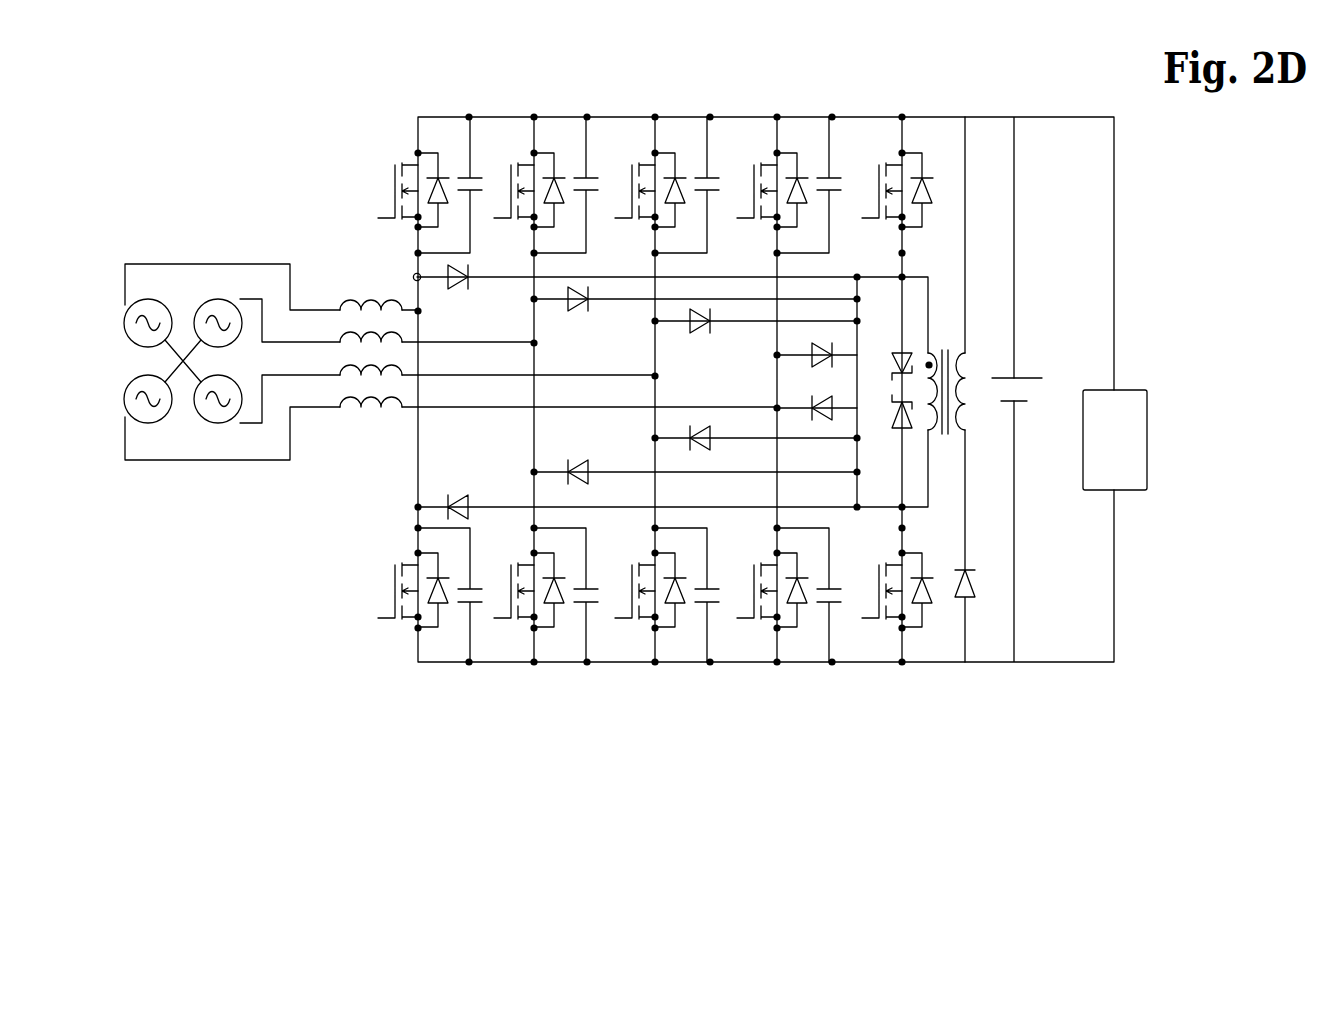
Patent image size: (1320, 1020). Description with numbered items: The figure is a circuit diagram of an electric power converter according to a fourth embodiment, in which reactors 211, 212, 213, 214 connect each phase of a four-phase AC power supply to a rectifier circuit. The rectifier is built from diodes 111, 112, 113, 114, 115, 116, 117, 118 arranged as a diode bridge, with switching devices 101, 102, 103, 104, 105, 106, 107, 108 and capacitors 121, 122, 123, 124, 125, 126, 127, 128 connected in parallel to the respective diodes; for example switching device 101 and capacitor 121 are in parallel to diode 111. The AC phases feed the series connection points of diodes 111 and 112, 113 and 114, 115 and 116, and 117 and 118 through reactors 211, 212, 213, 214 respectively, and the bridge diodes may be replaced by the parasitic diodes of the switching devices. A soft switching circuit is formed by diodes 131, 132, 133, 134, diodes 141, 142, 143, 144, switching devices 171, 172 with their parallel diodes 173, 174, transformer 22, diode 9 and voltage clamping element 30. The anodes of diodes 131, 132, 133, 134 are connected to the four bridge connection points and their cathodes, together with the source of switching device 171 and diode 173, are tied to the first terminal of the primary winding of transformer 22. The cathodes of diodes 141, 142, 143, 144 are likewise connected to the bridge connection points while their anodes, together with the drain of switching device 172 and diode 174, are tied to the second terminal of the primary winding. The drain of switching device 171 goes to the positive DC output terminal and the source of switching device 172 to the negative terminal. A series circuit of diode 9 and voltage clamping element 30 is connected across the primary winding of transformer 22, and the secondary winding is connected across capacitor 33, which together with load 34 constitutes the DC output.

The switching device 101 is at (408, 148).
The switching device 102 is at (400, 632).
The switching device 103 is at (529, 150).
The switching device 104 is at (520, 637).
The switching device 105 is at (636, 158).
The switching device 106 is at (645, 634).
The switching device 107 is at (765, 150).
The switching device 108 is at (765, 637).
The diode 111 is at (445, 162).
The diode 112 is at (437, 630).
The diode 113 is at (562, 160).
The diode 114 is at (560, 640).
The diode 115 is at (681, 160).
The diode 116 is at (684, 618).
The diode 117 is at (800, 160).
The diode 118 is at (808, 617).
The capacitor 121 is at (472, 180).
The capacitor 122 is at (480, 584).
The capacitor 123 is at (590, 180).
The capacitor 124 is at (598, 584).
The capacitor 125 is at (712, 180).
The capacitor 126 is at (719, 584).
The capacitor 127 is at (834, 180).
The capacitor 128 is at (840, 588).
The diode 131 is at (452, 291).
The diode 132 is at (575, 318).
The diode 133 is at (705, 334).
The diode 134 is at (825, 368).
The diode 141 is at (457, 493).
The diode 142 is at (578, 465).
The diode 143 is at (706, 447).
The diode 144 is at (844, 403).
The switching device 171 is at (900, 150).
The switching device 172 is at (888, 637).
The diode 173 is at (925, 160).
The diode 174 is at (930, 613).
The reactor 211 is at (371, 295).
The reactor 212 is at (371, 328).
The reactor 213 is at (371, 361).
The reactor 214 is at (371, 393).
The voltage clamping element 30 is at (894, 352).
The diode 9 is at (894, 434).
The transformer 22 is at (946, 381).
The capacitor 33 is at (1018, 374).
The load 34 is at (1097, 503).